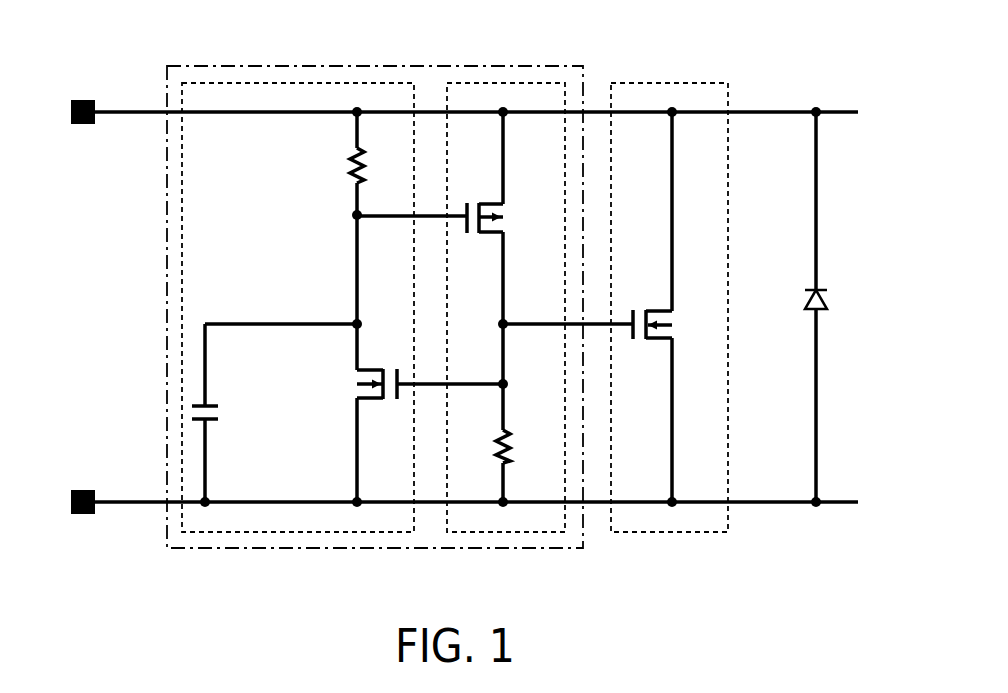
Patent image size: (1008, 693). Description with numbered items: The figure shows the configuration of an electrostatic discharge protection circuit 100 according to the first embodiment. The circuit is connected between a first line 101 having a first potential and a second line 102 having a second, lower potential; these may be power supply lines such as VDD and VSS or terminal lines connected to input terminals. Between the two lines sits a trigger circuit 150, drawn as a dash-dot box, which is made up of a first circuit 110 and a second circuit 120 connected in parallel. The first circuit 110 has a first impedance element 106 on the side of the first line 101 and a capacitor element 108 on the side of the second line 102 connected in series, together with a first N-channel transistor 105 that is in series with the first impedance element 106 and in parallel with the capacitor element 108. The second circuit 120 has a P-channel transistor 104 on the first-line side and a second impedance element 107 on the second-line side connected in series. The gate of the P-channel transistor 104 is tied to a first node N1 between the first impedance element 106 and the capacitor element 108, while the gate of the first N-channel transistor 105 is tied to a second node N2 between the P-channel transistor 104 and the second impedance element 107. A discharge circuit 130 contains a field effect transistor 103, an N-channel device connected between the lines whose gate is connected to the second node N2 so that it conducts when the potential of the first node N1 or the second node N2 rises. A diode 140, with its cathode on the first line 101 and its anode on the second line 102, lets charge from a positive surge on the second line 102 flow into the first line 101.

The electrostatic discharge protection circuit 100 is at (727, 46).
The first line 101 is at (94, 98).
The second line 102 is at (94, 513).
The field effect transistor 103 is at (675, 322).
The P-channel transistor 104 is at (513, 203).
The first N-channel transistor 105 is at (370, 422).
The first impedance element 106 is at (362, 140).
The second impedance element 107 is at (520, 458).
The capacitor element 108 is at (220, 422).
The first circuit 110 is at (216, 83).
The second circuit 120 is at (488, 83).
The discharge circuit 130 is at (646, 83).
The diode 140 is at (829, 297).
The trigger circuit 150 is at (315, 548).
The first node N1 is at (352, 215).
The second node N2 is at (508, 322).